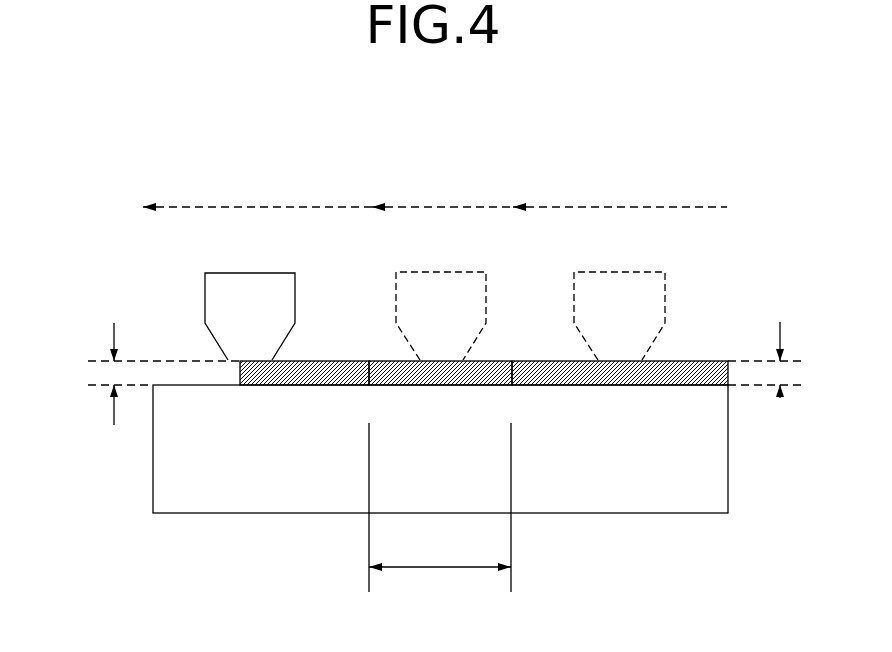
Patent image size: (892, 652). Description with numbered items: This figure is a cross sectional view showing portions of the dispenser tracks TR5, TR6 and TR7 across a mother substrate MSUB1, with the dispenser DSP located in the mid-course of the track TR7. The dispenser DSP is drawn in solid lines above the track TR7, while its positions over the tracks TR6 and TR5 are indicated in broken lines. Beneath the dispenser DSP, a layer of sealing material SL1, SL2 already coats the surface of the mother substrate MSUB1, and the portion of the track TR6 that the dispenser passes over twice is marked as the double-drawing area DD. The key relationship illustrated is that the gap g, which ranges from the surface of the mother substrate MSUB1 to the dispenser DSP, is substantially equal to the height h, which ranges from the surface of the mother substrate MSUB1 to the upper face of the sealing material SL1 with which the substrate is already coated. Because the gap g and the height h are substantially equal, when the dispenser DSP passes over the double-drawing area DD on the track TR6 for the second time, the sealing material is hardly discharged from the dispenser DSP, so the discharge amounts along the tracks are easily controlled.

The track TR7 is at (257, 189).
The track TR6 is at (442, 189).
The track TR5 is at (620, 189).
The dispenser DSP is at (250, 287).
The gap g is at (87, 374).
The height h is at (805, 360).
The sealing material SL1 is at (400, 385).
The sealing material SL2 is at (272, 370).
The mother substrate MSUB1 is at (212, 483).
The double-drawing area DD is at (440, 514).